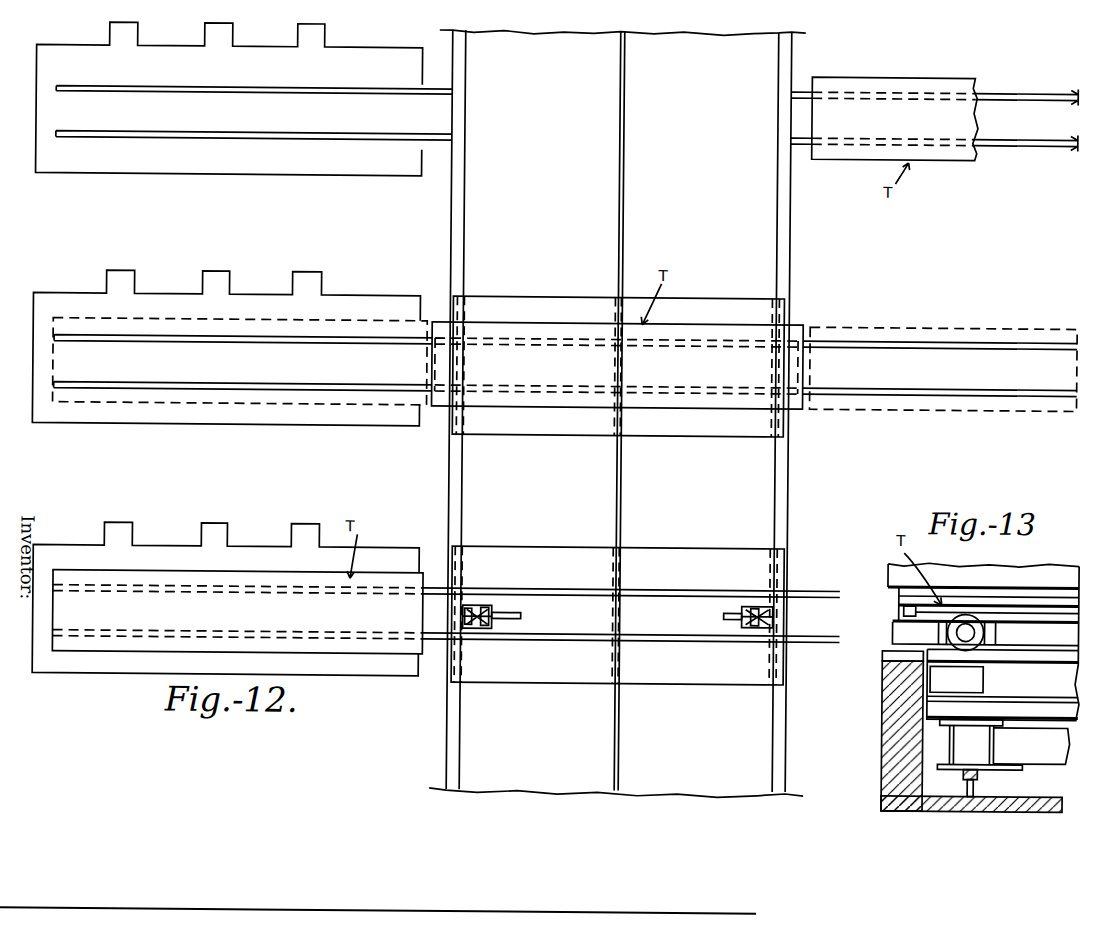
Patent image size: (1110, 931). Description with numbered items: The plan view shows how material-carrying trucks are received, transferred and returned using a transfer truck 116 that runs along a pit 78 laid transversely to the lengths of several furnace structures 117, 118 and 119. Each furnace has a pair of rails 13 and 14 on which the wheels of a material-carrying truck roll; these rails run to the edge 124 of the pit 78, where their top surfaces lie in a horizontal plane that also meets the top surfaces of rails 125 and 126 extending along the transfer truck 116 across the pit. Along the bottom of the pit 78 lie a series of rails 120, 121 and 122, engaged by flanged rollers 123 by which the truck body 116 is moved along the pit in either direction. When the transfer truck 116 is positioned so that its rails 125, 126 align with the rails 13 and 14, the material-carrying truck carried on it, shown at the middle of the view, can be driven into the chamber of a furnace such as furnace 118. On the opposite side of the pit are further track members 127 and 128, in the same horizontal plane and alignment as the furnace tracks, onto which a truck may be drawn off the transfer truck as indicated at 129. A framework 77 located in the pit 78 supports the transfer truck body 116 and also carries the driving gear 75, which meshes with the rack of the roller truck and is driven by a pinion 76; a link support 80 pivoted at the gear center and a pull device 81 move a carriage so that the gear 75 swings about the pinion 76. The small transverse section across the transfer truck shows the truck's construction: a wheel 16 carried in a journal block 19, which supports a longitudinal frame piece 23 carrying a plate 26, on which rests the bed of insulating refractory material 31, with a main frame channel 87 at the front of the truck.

In FIG. 12, the rail 13 is at (437, 88).
In FIG. 12, the rail 14 is at (437, 142).
In FIG. 13, the rail 14 is at (884, 651).
In FIG. 13, the wheel 16 is at (937, 632).
In FIG. 13, the journal block 19 is at (970, 620).
In FIG. 13, the longitudinal frame piece 23 is at (957, 606).
In FIG. 13, the plate 26 is at (892, 576).
In FIG. 13, the insulating refractory material 31 is at (892, 562).
In FIG. 12, the gear 75 is at (462, 603).
In FIG. 12, the pinion 76 is at (488, 630).
In FIG. 13, the framework 77 is at (950, 733).
In FIG. 12, the pit 78 is at (449, 232).
In FIG. 13, the pit 78 is at (938, 778).
In FIG. 12, the link support 80 is at (469, 630).
In FIG. 12, the pull device 81 is at (522, 612).
In FIG. 13, the main frame channel 87 is at (903, 610).
In FIG. 12, the transfer truck 116 is at (522, 306).
In FIG. 13, the transfer truck 116 is at (1018, 672).
In FIG. 12, the furnace structure 117 is at (78, 532).
In FIG. 12, the furnace structure 118 is at (190, 425).
In FIG. 12, the furnace structure 119 is at (222, 176).
In FIG. 12, the rail 120 is at (775, 716).
In FIG. 12, the rail 121 is at (621, 732).
In FIG. 12, the rail 122 is at (462, 732).
In FIG. 13, the rail 122 is at (966, 786).
In FIG. 13, the flanged roller 123 is at (982, 770).
In FIG. 12, the edge of pit 124 is at (449, 525).
In FIG. 12, the rail 125 is at (686, 386).
In FIG. 13, the rail 125 is at (1057, 659).
In FIG. 12, the rail 126 is at (700, 340).
In FIG. 12, the track member 127 is at (1015, 141).
In FIG. 12, the track member 128 is at (1004, 92).
In FIG. 12, the material-carrying truck position 129 is at (838, 158).